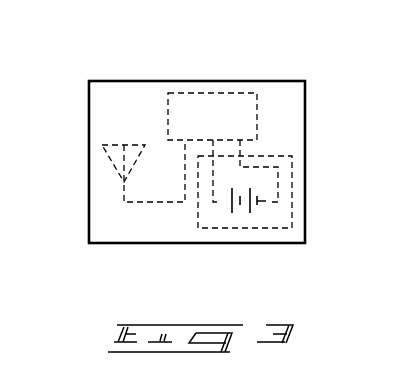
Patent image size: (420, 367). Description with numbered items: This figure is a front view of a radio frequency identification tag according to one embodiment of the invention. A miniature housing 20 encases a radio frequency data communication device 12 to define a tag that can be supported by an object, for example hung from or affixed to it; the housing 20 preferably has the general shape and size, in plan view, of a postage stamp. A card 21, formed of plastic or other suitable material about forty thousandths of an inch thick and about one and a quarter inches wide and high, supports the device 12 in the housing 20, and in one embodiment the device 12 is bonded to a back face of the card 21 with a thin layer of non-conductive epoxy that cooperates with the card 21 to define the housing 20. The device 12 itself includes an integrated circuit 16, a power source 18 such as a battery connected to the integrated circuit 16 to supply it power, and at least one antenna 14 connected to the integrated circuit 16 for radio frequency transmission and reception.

The radio frequency data communication device 12 is at (276, 119).
The antenna 14 is at (113, 166).
The integrated circuit 16 is at (231, 92).
The power source 18 is at (292, 188).
The housing 20 is at (89, 217).
The card 21 is at (141, 122).